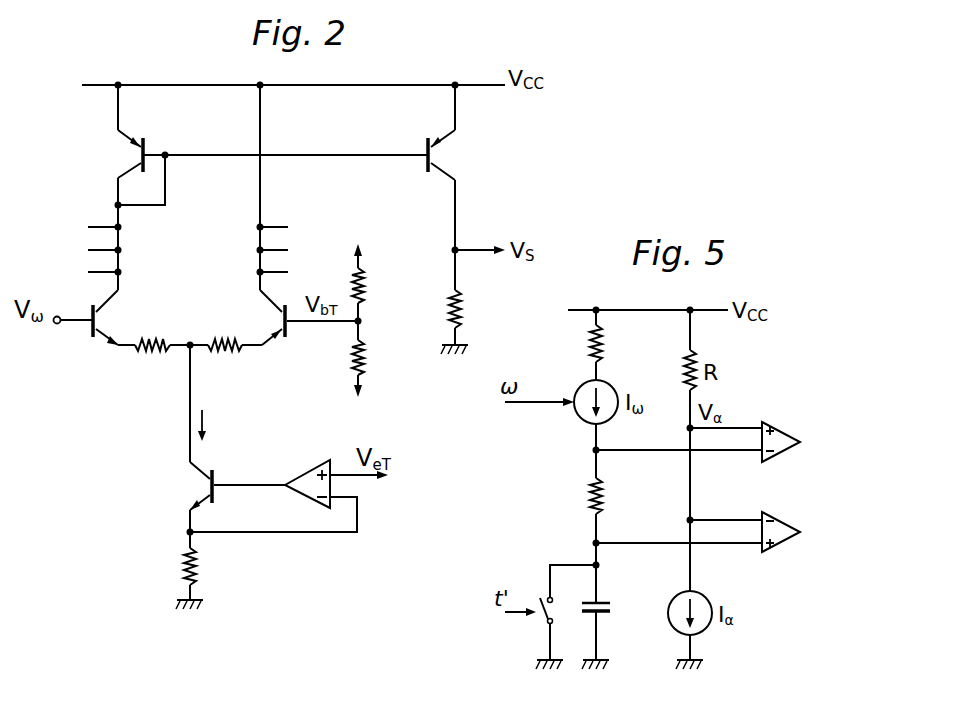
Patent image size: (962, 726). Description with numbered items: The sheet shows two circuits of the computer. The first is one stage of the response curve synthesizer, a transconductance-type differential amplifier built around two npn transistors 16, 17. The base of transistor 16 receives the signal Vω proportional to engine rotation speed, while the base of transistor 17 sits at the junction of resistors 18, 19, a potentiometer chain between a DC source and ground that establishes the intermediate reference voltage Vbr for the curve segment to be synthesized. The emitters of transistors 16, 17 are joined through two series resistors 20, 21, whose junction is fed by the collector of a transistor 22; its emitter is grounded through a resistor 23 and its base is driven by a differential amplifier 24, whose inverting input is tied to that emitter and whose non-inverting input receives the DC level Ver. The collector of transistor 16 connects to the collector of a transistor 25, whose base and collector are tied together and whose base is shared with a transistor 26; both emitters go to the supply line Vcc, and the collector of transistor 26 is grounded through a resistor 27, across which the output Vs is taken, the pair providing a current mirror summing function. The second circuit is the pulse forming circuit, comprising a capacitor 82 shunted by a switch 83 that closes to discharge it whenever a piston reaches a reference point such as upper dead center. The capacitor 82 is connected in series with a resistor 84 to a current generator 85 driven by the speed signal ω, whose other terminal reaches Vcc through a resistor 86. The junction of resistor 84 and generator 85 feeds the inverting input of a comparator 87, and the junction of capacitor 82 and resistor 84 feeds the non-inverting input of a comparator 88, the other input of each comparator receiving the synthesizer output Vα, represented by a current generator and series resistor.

In FIG. 2, the npn transistor 16 is at (99, 340).
In FIG. 2, the npn transistor 17 is at (283, 340).
In FIG. 2, the resistor 18 is at (366, 293).
In FIG. 2, the resistor 19 is at (366, 365).
In FIG. 2, the series resistor 20 is at (161, 351).
In FIG. 2, the series resistor 21 is at (217, 352).
In FIG. 2, the transistor 22 is at (206, 483).
In FIG. 2, the resistor 23 is at (185, 569).
In FIG. 2, the differential amplifier 24 is at (313, 469).
In FIG. 2, the transistor 25 is at (143, 147).
In FIG. 2, the transistor 26 is at (427, 148).
In FIG. 2, the resistor 27 is at (463, 303).
In FIG. 5, the capacitor 82 is at (606, 612).
In FIG. 5, the switch 83 is at (541, 620).
In FIG. 5, the resistor 84 is at (590, 500).
In FIG. 5, the current generator 85 is at (580, 425).
In FIG. 5, the resistor 86 is at (604, 354).
In FIG. 5, the comparator 87 is at (779, 421).
In FIG. 5, the comparator 88 is at (784, 555).